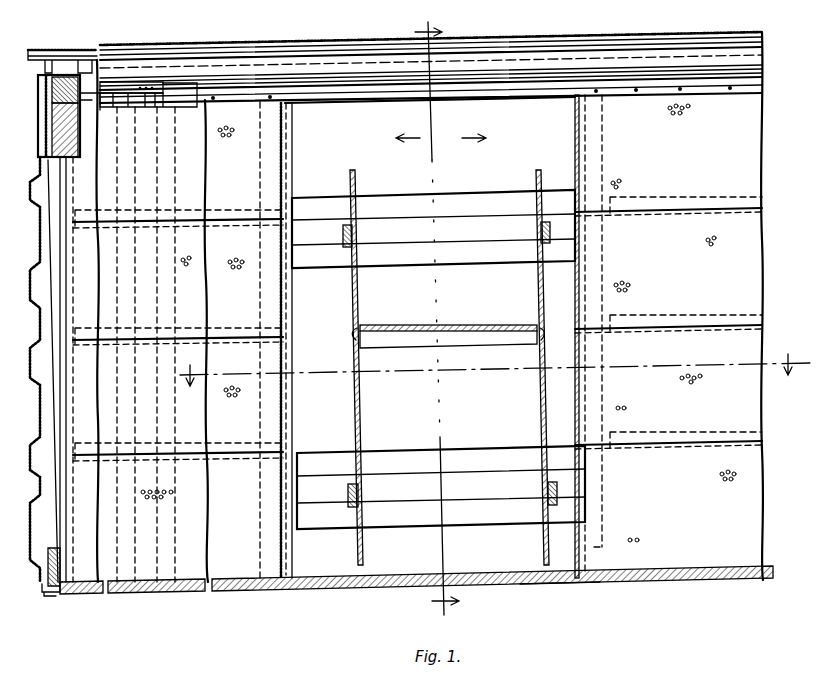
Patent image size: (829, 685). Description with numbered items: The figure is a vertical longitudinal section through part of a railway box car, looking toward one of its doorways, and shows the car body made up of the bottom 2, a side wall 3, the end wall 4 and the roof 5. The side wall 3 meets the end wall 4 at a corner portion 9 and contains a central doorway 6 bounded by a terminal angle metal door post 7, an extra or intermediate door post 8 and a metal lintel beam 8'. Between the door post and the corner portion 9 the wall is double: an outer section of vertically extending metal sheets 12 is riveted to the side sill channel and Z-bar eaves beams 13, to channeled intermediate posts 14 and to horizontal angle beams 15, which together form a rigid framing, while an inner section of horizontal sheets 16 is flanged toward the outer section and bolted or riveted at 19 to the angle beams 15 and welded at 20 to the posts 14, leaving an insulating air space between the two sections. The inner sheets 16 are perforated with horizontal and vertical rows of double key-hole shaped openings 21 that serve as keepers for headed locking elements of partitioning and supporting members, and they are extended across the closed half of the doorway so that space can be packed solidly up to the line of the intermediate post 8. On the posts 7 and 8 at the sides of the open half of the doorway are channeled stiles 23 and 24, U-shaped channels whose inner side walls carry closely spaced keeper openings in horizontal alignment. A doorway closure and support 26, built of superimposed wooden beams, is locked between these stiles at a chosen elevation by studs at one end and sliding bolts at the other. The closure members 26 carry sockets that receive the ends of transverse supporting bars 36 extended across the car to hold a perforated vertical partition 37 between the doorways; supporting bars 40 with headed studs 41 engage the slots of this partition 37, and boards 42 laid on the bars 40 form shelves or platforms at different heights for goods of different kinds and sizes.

The bottom 2 is at (326, 603).
The side walls 3 is at (437, 318).
The end walls 4 is at (36, 297).
The roof 5 is at (560, 46).
The doorway 6 is at (441, 139).
The door post 7 is at (275, 580).
The intermediate door post 8 is at (612, 336).
The lintel beam 8' is at (430, 110).
The corner portion 9 is at (62, 250).
The metal sheets 12 is at (90, 93).
The eaves beams 13 is at (112, 86).
The intermediate posts 14 is at (142, 100).
The angle beams 15 is at (218, 212).
The sheets 16 is at (284, 184).
The bolts or rivets 19 is at (236, 222).
The welds 20 is at (150, 220).
The slots or openings 21 is at (226, 134).
The channeled stile 23 is at (570, 578).
The channeled stile 24 is at (294, 551).
The doorway closure and support 26 is at (436, 199).
The transverse supporting bars 36 is at (352, 264).
The vertical partition 37 is at (360, 421).
The supporting bars 40 is at (446, 340).
The headed studs 41 is at (355, 340).
The boards 42 is at (432, 326).